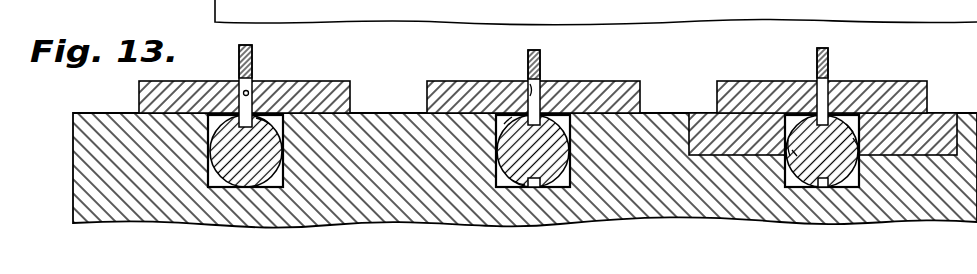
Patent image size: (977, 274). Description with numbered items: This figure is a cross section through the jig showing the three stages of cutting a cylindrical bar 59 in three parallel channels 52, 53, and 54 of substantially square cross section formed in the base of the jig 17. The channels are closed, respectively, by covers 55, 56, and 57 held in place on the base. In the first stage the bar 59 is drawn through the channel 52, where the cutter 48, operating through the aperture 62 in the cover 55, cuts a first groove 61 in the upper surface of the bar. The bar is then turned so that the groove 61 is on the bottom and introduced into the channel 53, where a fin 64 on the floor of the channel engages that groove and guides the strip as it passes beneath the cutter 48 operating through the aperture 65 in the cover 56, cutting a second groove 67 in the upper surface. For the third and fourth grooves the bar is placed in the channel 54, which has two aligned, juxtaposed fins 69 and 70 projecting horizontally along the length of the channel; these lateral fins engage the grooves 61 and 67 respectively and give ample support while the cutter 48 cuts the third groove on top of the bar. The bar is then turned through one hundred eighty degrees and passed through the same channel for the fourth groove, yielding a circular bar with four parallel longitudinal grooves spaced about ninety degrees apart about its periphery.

The base of the jig 17 is at (388, 113).
The cutter 48 is at (238, 47).
The first channel 52 is at (280, 186).
The second channel 53 is at (562, 186).
The third channel 54 is at (852, 186).
The cover of the first channel 55 is at (324, 82).
The cover of the second channel 56 is at (618, 82).
The cover of the third channel 57 is at (895, 82).
The cylindrical bar 59 is at (228, 133).
The groove 61 is at (257, 118).
The aperture 62 is at (252, 100).
The fin 64 is at (533, 187).
The aperture 65 is at (530, 84).
The groove 67 is at (522, 118).
The fin 69 is at (795, 153).
The fin 70 is at (856, 142).